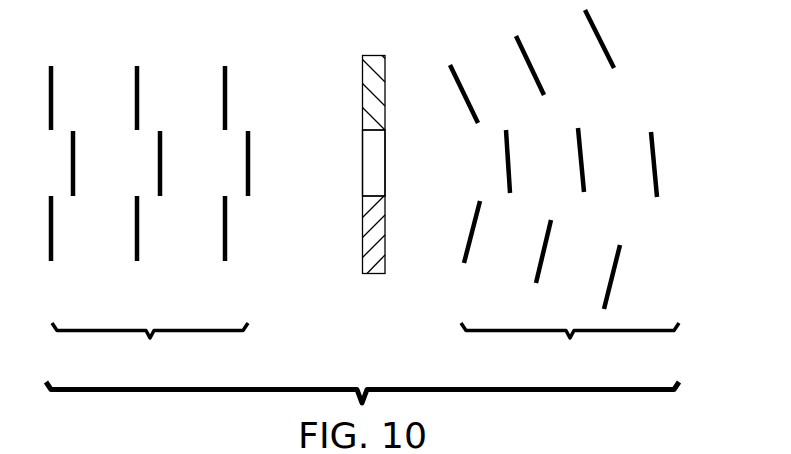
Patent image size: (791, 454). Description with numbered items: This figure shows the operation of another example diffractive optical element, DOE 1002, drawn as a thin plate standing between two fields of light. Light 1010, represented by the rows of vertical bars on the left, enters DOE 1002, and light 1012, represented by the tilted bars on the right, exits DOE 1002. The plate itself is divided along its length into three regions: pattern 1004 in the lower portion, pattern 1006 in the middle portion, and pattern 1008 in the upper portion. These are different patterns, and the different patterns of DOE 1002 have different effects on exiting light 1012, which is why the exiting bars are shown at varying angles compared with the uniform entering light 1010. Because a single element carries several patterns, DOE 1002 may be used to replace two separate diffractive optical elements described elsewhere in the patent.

The DOE 1002 is at (344, 137).
The pattern 1004 is at (372, 236).
The pattern 1006 is at (363, 163).
The pattern 1008 is at (371, 77).
The light 1010 is at (149, 218).
The light 1012 is at (564, 190).